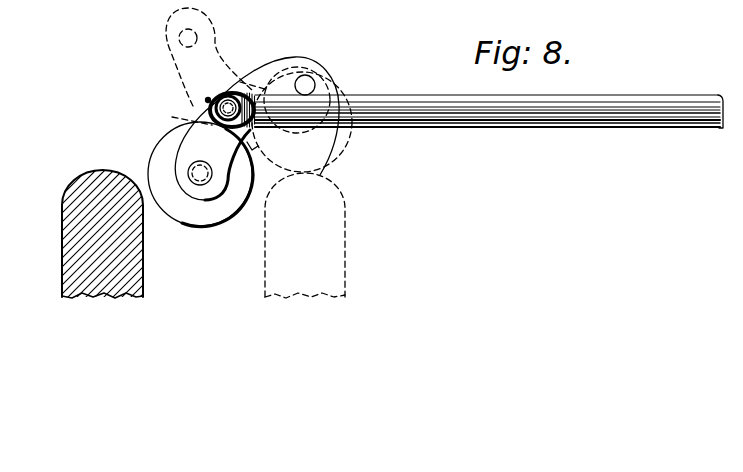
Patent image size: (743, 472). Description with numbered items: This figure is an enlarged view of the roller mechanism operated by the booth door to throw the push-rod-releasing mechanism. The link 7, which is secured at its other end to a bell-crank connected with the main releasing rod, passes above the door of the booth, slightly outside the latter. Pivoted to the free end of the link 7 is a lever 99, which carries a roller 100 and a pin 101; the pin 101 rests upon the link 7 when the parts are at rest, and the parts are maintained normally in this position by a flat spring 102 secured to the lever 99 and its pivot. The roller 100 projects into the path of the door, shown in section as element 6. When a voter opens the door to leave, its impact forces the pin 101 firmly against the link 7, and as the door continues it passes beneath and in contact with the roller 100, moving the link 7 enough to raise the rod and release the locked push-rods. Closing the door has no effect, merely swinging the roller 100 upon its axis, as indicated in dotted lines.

The bar 6 is at (68, 245).
The link 7 is at (485, 128).
The lever 99 is at (250, 68).
The roller 100 is at (202, 215).
The pin 101 is at (307, 83).
The flat spring 102 is at (207, 99).